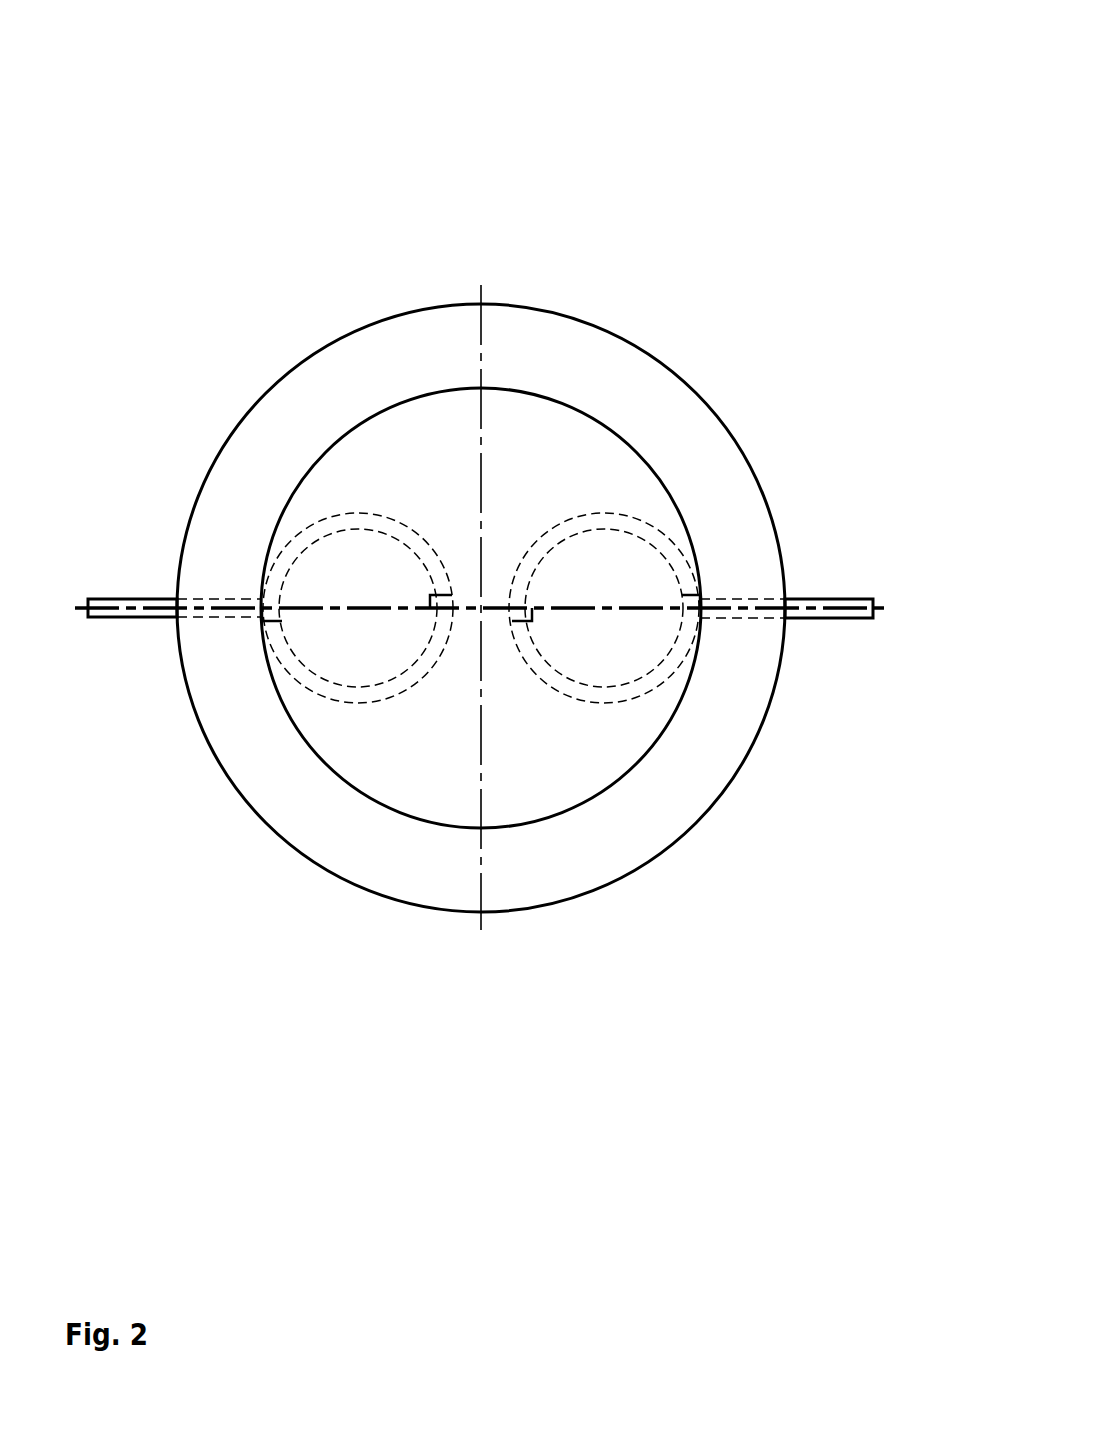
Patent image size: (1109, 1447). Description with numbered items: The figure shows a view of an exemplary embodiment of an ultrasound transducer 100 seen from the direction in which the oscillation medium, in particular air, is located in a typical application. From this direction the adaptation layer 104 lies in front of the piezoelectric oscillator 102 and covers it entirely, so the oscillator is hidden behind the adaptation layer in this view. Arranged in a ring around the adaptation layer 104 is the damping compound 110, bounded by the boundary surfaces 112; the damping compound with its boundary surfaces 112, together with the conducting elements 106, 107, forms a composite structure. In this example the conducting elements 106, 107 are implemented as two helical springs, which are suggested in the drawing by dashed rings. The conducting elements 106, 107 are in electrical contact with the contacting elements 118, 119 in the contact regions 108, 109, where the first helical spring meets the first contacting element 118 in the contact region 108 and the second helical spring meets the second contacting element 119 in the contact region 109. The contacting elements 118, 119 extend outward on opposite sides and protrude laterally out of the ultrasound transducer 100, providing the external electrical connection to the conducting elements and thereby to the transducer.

The ultrasound transducer 100 is at (774, 103).
The piezoelectric oscillator 102 is at (484, 486).
The adaptation layer 104 is at (544, 455).
The conducting element 106 is at (340, 697).
The conducting element 107 is at (610, 692).
The contact region 108 is at (265, 605).
The contact region 109 is at (700, 590).
The damping compound 110 is at (300, 393).
The boundary surfaces 112 is at (650, 355).
The contacting element 118 is at (147, 612).
The contacting element 119 is at (828, 608).